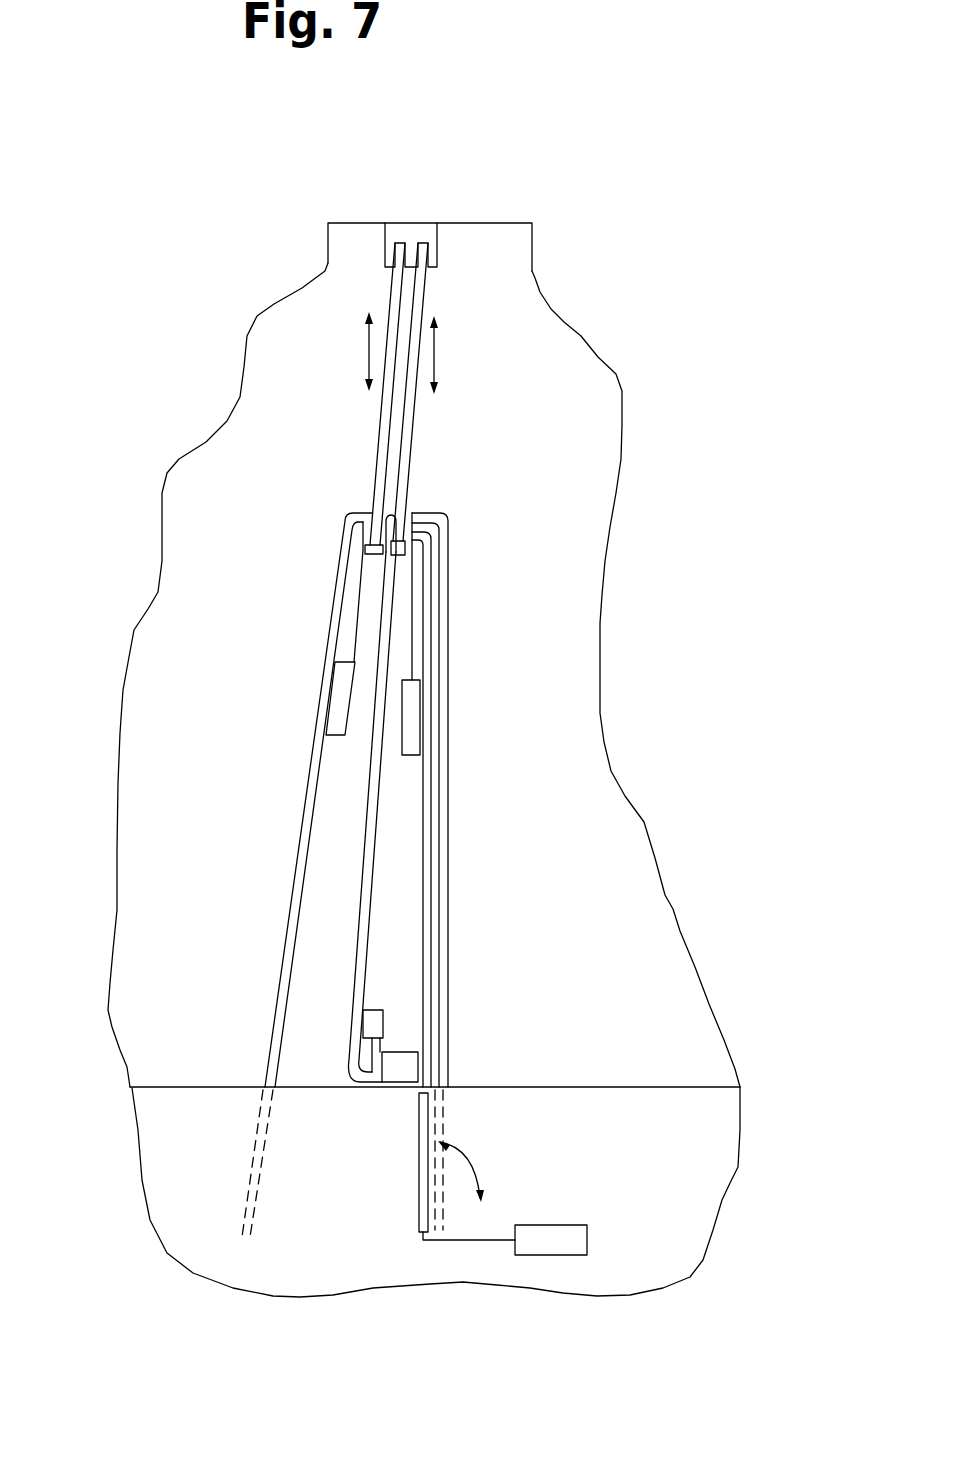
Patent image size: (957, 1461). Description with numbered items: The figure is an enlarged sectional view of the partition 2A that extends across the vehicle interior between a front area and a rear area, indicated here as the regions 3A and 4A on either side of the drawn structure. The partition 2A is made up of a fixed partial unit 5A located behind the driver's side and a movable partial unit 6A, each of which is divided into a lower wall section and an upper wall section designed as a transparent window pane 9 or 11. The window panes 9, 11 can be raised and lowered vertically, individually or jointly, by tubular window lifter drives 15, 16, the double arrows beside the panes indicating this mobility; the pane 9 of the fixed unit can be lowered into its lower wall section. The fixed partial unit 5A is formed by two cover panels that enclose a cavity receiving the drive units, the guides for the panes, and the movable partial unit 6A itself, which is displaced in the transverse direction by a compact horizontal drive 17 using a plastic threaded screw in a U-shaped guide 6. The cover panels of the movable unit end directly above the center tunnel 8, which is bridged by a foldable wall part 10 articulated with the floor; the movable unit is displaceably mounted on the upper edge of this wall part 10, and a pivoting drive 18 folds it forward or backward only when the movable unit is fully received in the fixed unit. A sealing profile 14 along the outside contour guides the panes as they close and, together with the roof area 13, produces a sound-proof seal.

The partition 2A is at (445, 320).
The sealing profile 14 is at (400, 222).
The roof area 13 is at (478, 222).
The window pane 9 is at (390, 302).
The window pane 11 is at (422, 304).
The guide frame 6 is at (428, 567).
The fixed partial unit 5A is at (292, 897).
The movable partial unit 6A is at (367, 832).
The window lifter drive 15 is at (338, 698).
The window lifter drive 16 is at (412, 717).
The horizontal drive 17 is at (373, 1028).
The upper panel 4A is at (576, 702).
The upper panel section 3A is at (156, 991).
The center tunnel 8 is at (708, 1128).
The foldable wall part 10 is at (425, 1122).
The pivoting drive 18 is at (558, 1243).